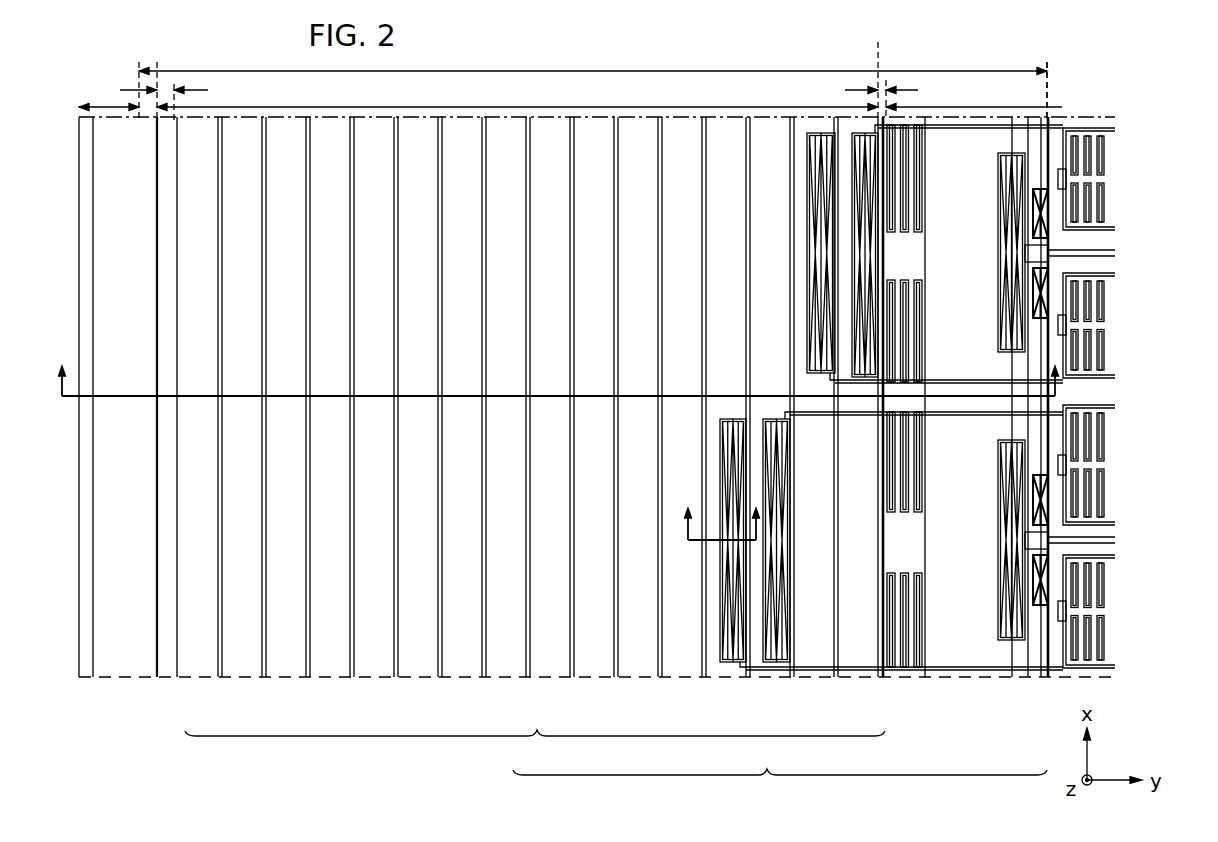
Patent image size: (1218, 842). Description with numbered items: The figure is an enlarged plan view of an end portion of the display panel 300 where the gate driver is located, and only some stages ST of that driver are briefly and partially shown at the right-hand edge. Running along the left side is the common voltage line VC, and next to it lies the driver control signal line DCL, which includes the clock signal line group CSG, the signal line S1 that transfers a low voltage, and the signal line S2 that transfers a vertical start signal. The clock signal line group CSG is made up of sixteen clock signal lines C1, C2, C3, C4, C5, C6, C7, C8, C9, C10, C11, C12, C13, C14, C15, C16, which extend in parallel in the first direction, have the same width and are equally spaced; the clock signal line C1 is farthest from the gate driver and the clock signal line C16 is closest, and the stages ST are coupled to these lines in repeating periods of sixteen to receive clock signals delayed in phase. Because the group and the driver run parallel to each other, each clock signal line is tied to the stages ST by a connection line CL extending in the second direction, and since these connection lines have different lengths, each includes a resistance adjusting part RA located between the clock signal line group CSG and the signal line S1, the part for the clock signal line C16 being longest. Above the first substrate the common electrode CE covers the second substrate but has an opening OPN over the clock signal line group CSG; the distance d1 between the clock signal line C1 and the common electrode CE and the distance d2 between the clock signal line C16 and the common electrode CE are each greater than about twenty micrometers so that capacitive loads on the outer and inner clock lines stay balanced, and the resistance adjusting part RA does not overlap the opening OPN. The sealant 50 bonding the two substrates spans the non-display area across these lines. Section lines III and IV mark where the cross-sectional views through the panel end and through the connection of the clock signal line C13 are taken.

The display panel 300 is at (1030, 46).
The common voltage line VC is at (119, 679).
The clock signal line C1 is at (197, 679).
The clock signal line C2 is at (241, 679).
The clock signal line C3 is at (285, 679).
The clock signal line C4 is at (329, 679).
The clock signal line C5 is at (373, 679).
The clock signal line C6 is at (417, 679).
The clock signal line C7 is at (461, 679).
The clock signal line C8 is at (505, 679).
The clock signal line C9 is at (549, 679).
The clock signal line C10 is at (593, 679).
The clock signal line C11 is at (637, 679).
The clock signal line C12 is at (681, 679).
The clock signal line C13 is at (725, 679).
The clock signal line C14 is at (769, 679).
The clock signal line C15 is at (813, 679).
The clock signal line C16 is at (857, 679).
The signal line S1 is at (969, 679).
The signal line S2 is at (1033, 679).
The stage ST is at (1116, 177).
The resistance adjusting part RA is at (905, 124).
The connection line CL is at (958, 124).
The common electrode CE is at (118, 104).
The opening OPN is at (517, 97).
The sealant 50 is at (593, 59).
The distance d1 is at (162, 85).
The distance d2 is at (880, 84).
The section line III-III' III is at (1112, 352).
The section line IV-IV' IV is at (800, 496).
The clock signal line group CSG is at (535, 750).
The control signal line DCL is at (780, 789).